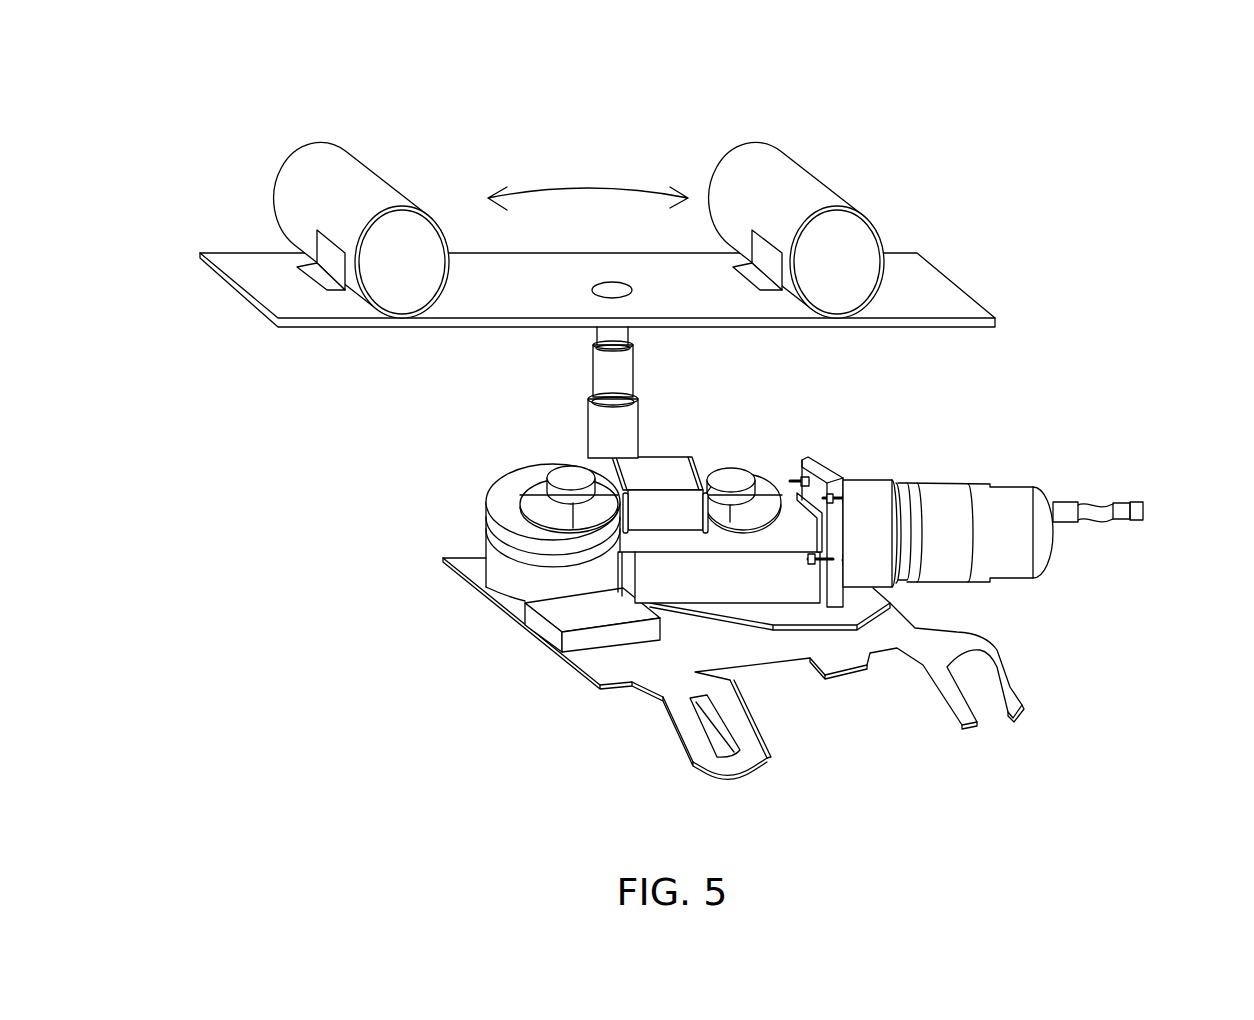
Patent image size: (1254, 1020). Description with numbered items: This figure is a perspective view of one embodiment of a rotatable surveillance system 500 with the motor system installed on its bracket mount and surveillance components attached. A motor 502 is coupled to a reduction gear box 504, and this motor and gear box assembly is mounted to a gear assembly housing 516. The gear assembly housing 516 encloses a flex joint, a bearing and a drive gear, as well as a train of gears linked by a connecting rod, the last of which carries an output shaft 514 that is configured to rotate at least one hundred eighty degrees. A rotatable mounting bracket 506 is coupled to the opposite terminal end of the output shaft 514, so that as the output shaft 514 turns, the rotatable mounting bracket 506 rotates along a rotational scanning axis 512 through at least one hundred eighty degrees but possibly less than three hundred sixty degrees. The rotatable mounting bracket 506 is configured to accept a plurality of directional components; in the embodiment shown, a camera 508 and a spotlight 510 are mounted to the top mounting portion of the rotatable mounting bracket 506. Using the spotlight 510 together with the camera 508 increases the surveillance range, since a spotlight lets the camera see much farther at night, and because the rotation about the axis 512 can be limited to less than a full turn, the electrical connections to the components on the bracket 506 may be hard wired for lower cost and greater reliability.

The rotatable surveillance system 500 is at (1110, 137).
The motor 502 is at (947, 492).
The reduction gear box 504 is at (872, 492).
The rotatable mounting bracket 506 is at (302, 298).
The camera 508 is at (342, 183).
The spotlight 510 is at (760, 183).
The rotational scanning axis 512 is at (588, 190).
The output shaft 514 is at (602, 372).
The gear assembly housing 516 is at (605, 663).